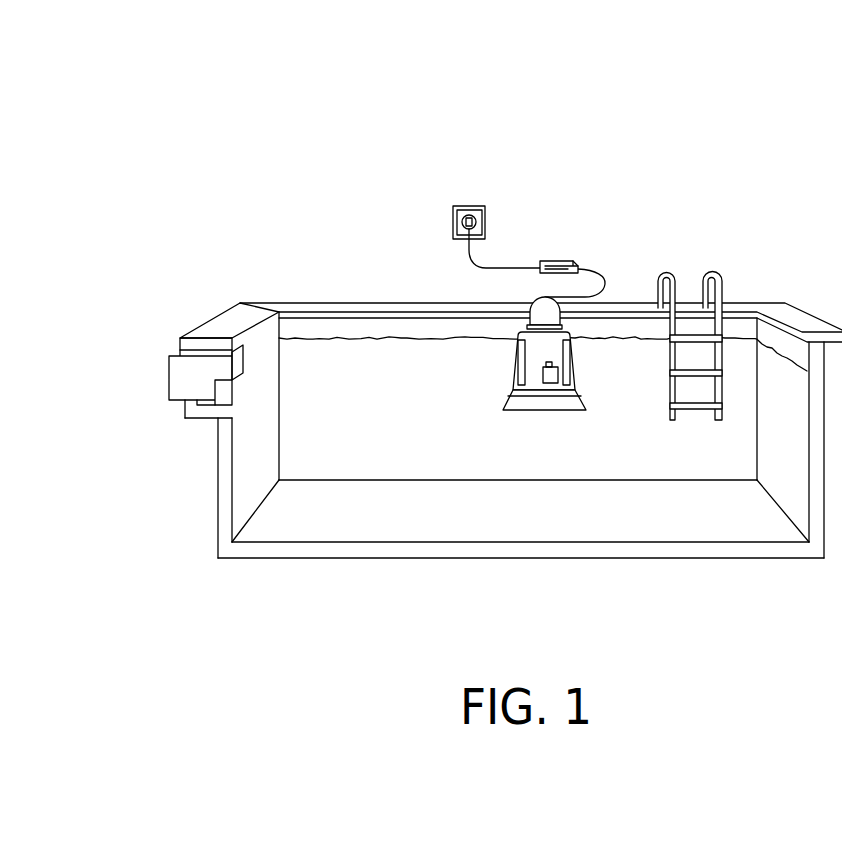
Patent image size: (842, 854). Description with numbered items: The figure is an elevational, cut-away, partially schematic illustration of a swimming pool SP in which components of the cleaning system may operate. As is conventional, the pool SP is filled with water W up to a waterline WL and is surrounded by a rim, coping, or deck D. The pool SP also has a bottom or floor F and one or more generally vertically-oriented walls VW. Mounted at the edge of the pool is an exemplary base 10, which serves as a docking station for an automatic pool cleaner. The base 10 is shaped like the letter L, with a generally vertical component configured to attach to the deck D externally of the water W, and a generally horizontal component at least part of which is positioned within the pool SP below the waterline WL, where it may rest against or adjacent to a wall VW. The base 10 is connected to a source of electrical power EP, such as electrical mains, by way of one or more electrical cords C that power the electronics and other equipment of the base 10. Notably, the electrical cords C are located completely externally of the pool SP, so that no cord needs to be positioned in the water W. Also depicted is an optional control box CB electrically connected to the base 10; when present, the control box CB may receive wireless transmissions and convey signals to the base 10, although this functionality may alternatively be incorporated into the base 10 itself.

The base 10 is at (617, 222).
The swimming pool SP is at (492, 386).
The source of electrical power EP is at (468, 204).
The electrical cord C is at (502, 267).
The control box CB is at (556, 260).
The deck D is at (215, 326).
The water W is at (542, 307).
The waterline WL is at (340, 327).
The vertical wall VW is at (252, 455).
The floor F is at (333, 520).